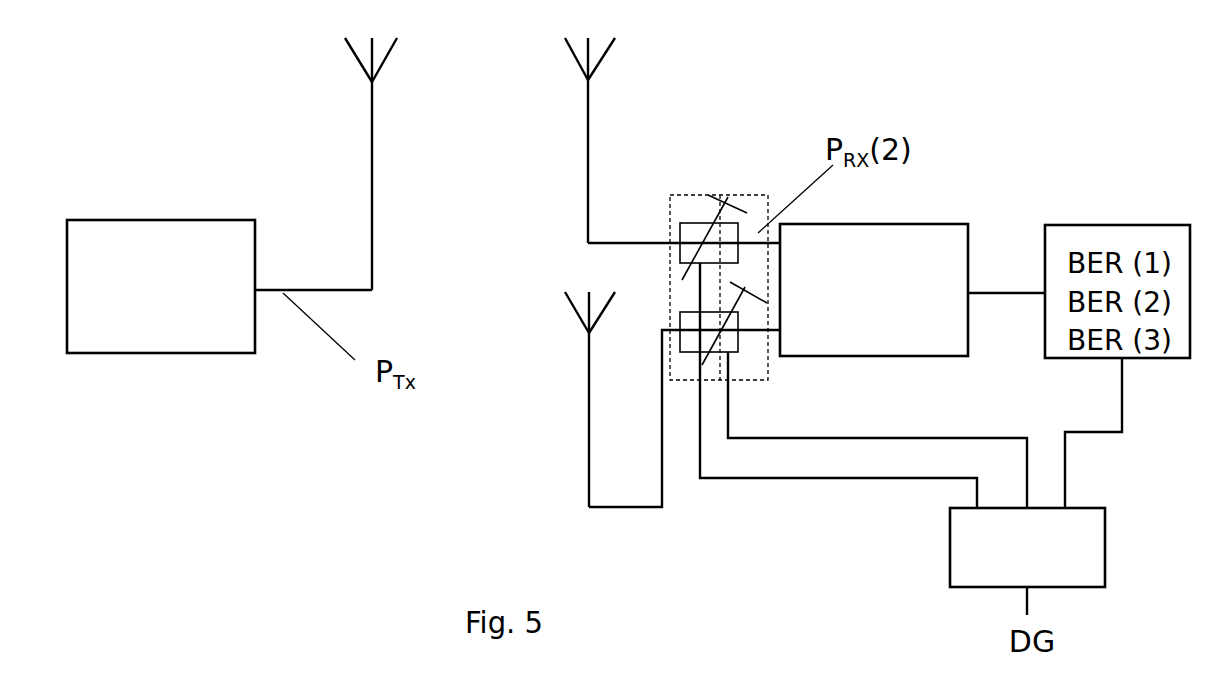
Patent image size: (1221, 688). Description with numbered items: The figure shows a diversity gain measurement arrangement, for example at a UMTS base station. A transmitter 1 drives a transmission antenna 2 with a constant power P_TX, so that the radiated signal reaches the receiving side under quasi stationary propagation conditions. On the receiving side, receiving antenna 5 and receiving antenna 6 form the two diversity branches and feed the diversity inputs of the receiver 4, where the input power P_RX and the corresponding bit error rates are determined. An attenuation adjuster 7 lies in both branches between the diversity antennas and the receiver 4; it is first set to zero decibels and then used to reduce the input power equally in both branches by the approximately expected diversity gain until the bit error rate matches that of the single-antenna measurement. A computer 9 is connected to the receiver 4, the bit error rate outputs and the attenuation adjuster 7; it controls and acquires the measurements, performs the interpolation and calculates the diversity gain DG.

The transmitter 1 is at (193, 220).
The transmission antenna 2 is at (370, 218).
The receiver 4 is at (897, 225).
The receiving antenna 1 (diversity) 5 is at (588, 220).
The receiving antenna 2 (diversity) 6 is at (588, 482).
The attenuation adjuster 7 is at (767, 370).
The computer 9 is at (1105, 547).